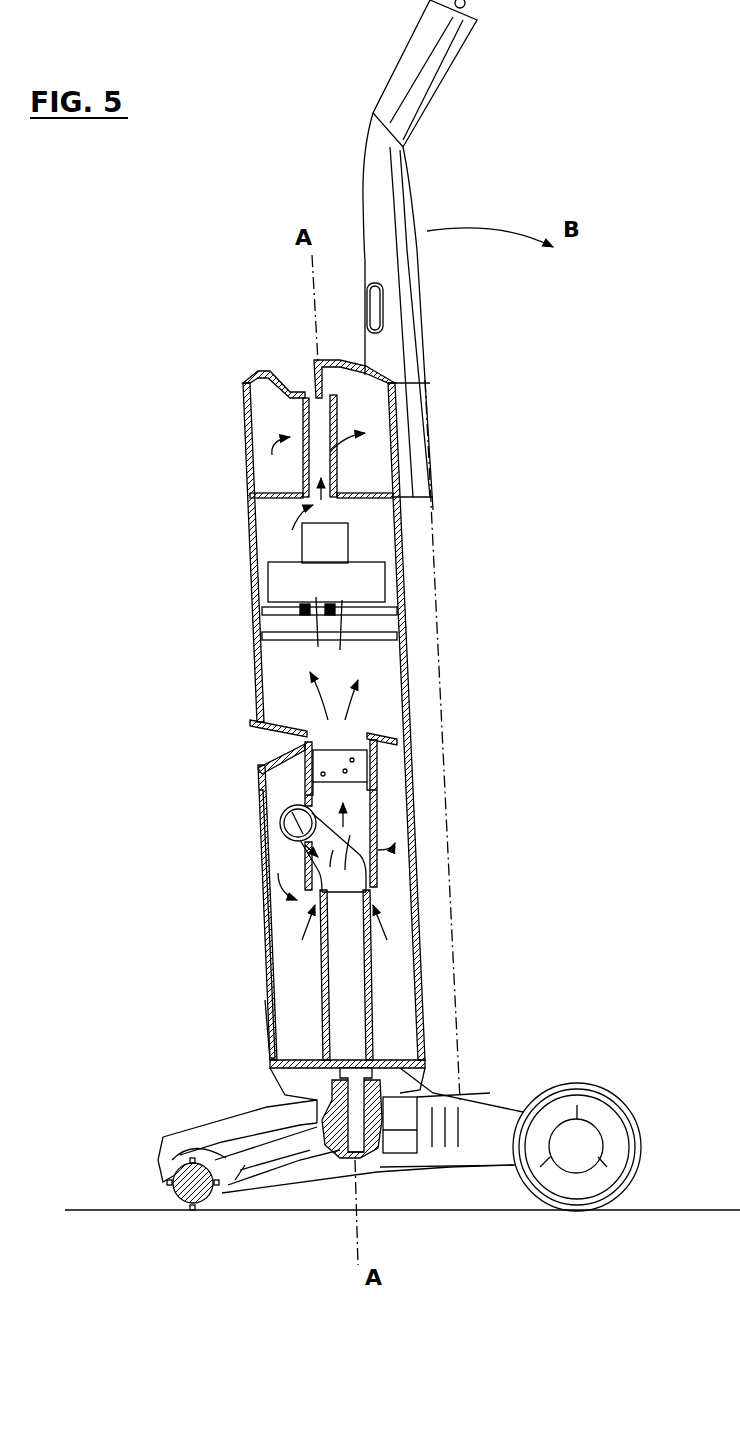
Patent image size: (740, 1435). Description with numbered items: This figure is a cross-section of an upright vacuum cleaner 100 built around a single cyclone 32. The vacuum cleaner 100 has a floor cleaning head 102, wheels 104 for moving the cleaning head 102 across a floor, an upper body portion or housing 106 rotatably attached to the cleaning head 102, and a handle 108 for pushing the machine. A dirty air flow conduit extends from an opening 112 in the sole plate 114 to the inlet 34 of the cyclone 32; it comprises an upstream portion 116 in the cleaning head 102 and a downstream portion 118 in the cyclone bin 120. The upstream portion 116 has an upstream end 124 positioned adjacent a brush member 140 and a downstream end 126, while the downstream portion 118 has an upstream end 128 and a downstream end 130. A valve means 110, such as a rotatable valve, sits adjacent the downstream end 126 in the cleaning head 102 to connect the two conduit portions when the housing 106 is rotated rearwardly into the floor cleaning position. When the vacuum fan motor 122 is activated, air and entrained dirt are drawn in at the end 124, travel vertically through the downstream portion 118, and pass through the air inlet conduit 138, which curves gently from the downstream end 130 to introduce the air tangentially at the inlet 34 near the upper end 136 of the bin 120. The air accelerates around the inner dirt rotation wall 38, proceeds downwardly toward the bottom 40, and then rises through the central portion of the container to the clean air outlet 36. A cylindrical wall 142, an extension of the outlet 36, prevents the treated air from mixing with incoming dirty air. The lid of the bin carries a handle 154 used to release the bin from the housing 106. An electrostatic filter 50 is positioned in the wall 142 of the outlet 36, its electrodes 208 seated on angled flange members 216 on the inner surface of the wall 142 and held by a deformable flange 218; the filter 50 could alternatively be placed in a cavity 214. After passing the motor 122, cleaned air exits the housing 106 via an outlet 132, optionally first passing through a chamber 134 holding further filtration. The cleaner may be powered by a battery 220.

The cyclone 32 is at (185, 990).
The air inlet 34 is at (280, 830).
The outlet 36 is at (403, 693).
The inner dirt rotation surface or wall 38 is at (280, 870).
The bottom 40 is at (280, 1040).
The electrostatic filter 50 is at (407, 768).
The vacuum cleaner 100 is at (510, 750).
The floor cleaning head 102 is at (140, 1150).
The wheels 104 is at (555, 1082).
The housing 106 is at (253, 688).
The handle 108 is at (393, 157).
The valve means 110 is at (390, 1170).
The opening 112 is at (216, 1200).
The sole plate 114 is at (378, 1180).
The upstream portion 116 is at (307, 1167).
The downstream portion 118 is at (400, 955).
The cyclone bin 120 is at (265, 960).
The vacuum fan motor 122 is at (360, 580).
The upstream end 124 is at (235, 1190).
The downstream end 126 is at (390, 1072).
The upstream end 128 is at (398, 1030).
The downstream end 130 is at (400, 920).
The outlet 132 is at (287, 375).
The chamber 134 is at (265, 457).
The upper end 136 is at (258, 768).
The air inlet conduit 138 is at (405, 865).
The brush member 140 is at (210, 1195).
The wall 142 is at (404, 885).
The handle 154 is at (253, 722).
The electrodes 208 is at (400, 828).
The cavity 214 is at (262, 653).
The angled flange members 216 is at (400, 797).
The deformable flange 218 is at (407, 728).
The battery 220 is at (467, 1170).